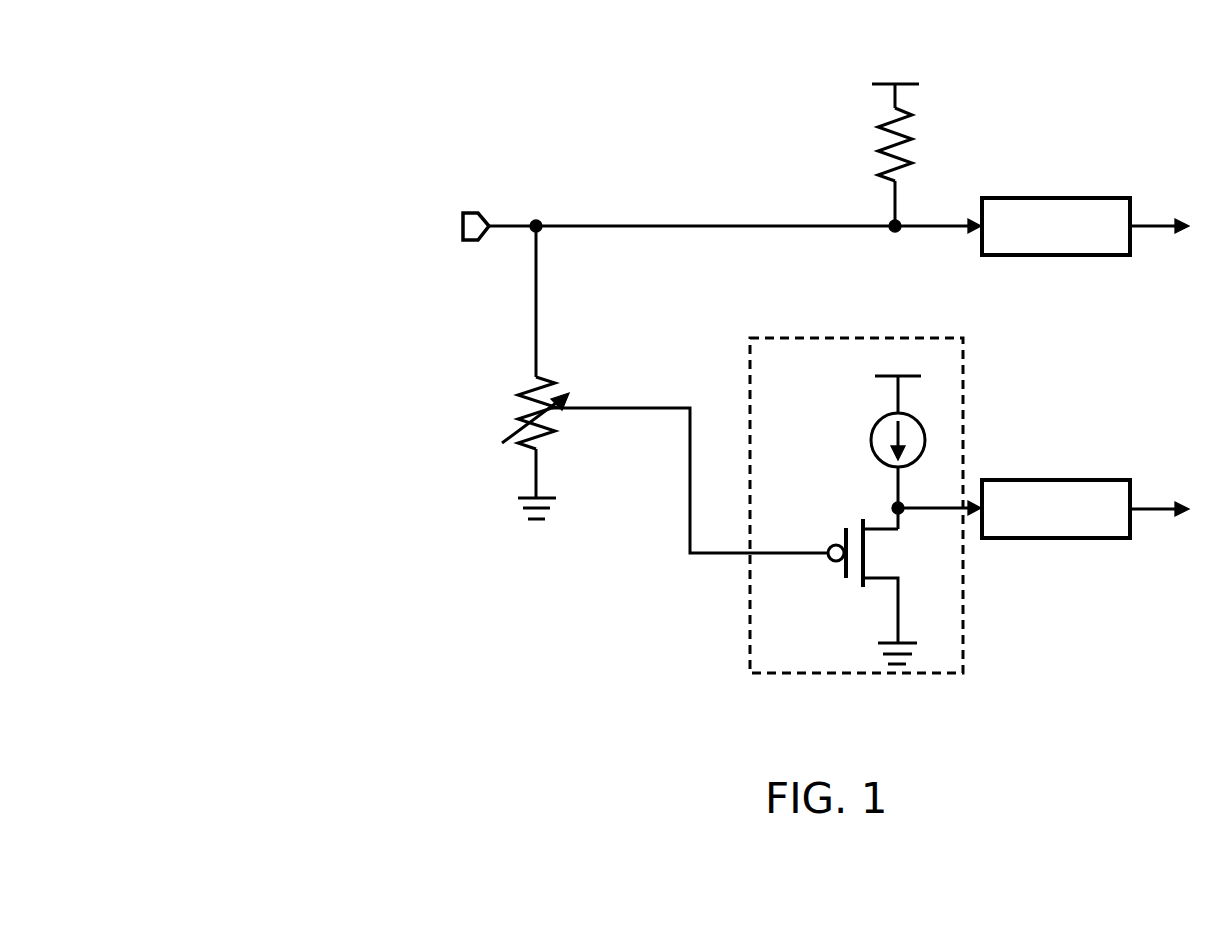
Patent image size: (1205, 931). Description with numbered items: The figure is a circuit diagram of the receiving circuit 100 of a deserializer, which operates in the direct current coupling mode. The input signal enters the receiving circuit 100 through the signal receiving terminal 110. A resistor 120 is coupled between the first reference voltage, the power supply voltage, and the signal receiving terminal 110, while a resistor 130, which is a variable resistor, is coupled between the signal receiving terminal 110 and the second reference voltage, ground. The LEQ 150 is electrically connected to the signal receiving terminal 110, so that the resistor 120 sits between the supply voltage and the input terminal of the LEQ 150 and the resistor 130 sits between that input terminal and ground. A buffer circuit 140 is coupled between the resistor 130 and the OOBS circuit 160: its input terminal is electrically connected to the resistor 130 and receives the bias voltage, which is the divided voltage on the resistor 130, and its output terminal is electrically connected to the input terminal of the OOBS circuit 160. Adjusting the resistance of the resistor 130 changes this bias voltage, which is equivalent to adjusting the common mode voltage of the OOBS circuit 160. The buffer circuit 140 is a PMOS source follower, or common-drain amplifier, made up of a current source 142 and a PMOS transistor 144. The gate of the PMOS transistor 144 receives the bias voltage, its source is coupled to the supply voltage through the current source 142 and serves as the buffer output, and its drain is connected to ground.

The receiving circuit 100 is at (293, 133).
The signal receiving terminal 110 is at (542, 223).
The resistor 120 is at (878, 150).
The resistor 130 is at (521, 395).
The buffer circuit 140 is at (802, 338).
The current source 142 is at (870, 435).
The PMOS transistor 144 is at (832, 592).
The LEQ 150 is at (1062, 198).
The OOBS circuit 160 is at (1062, 480).